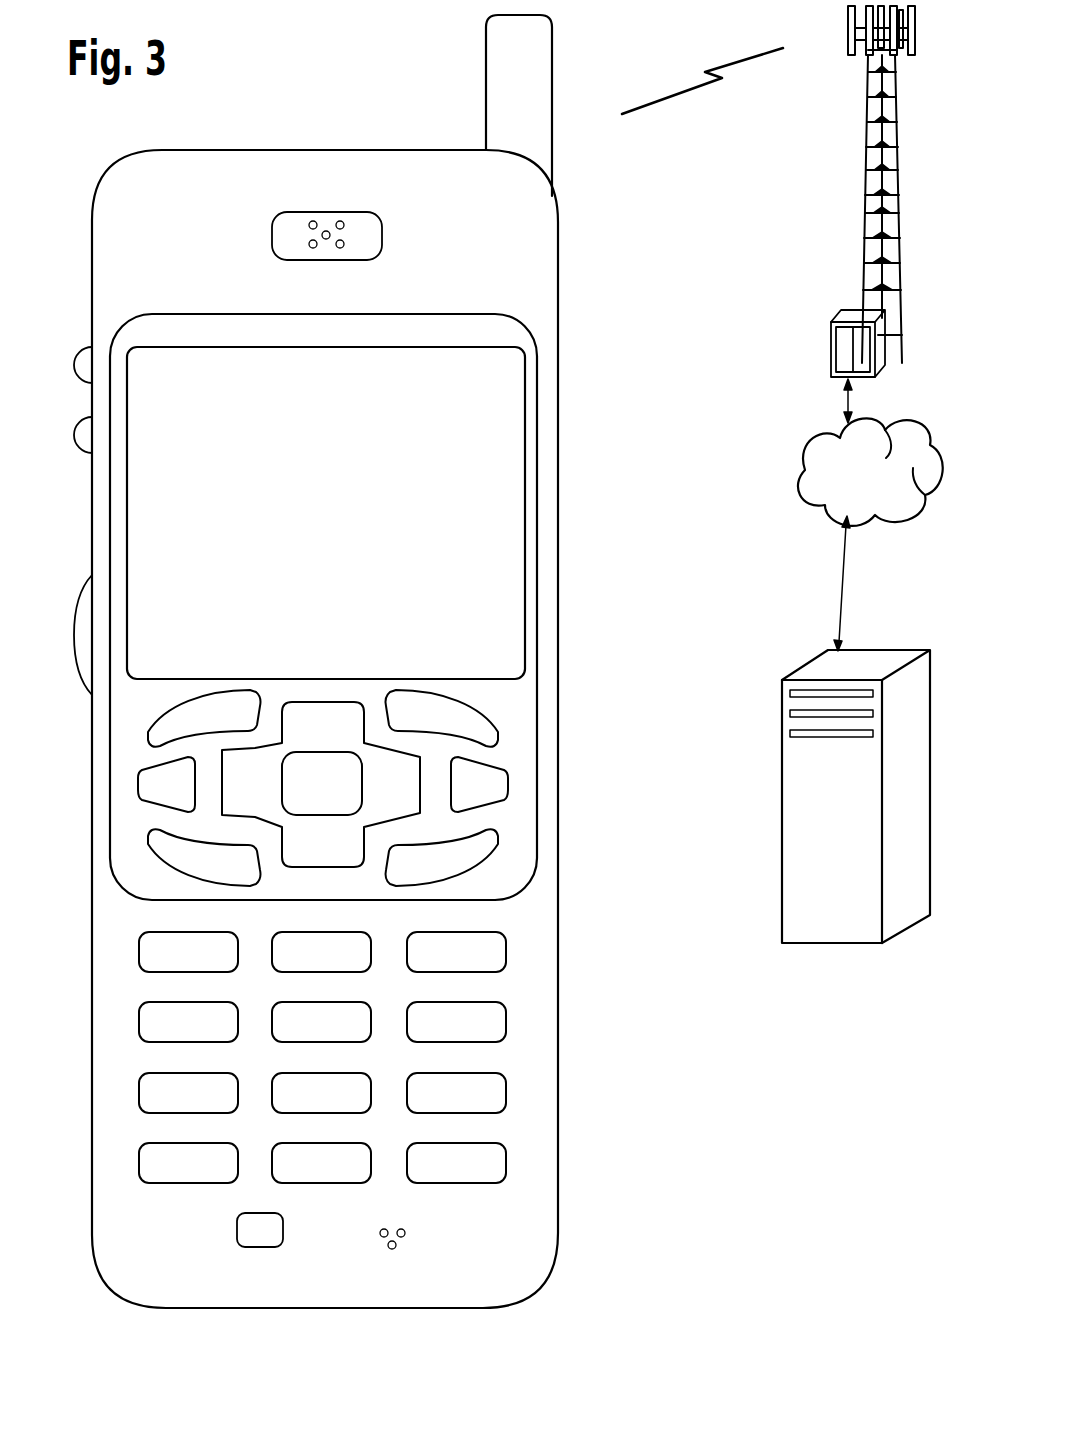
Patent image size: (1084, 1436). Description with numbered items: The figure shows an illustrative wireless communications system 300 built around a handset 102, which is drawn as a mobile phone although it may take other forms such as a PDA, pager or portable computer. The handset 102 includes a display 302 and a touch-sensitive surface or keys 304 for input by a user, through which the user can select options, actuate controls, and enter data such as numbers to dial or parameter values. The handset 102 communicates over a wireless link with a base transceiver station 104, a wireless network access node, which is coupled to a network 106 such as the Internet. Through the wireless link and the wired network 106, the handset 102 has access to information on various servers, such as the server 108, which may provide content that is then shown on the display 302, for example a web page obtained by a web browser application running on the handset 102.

The wireless communications system 300 is at (287, 98).
The handset 102 is at (148, 1306).
The display 302 is at (527, 360).
The keys 304 is at (556, 1178).
The base transceiver station 104 is at (860, 207).
The network 106 is at (812, 512).
The server 108 is at (815, 945).